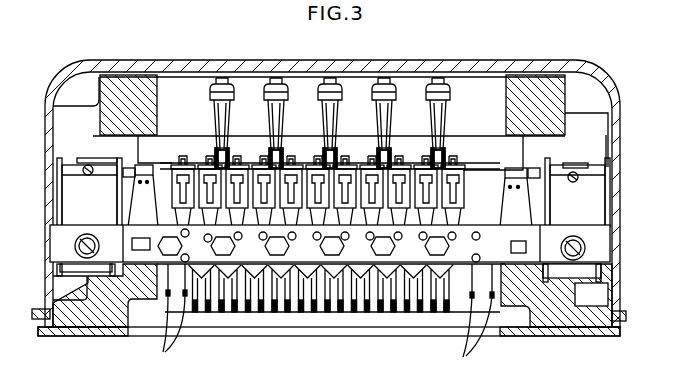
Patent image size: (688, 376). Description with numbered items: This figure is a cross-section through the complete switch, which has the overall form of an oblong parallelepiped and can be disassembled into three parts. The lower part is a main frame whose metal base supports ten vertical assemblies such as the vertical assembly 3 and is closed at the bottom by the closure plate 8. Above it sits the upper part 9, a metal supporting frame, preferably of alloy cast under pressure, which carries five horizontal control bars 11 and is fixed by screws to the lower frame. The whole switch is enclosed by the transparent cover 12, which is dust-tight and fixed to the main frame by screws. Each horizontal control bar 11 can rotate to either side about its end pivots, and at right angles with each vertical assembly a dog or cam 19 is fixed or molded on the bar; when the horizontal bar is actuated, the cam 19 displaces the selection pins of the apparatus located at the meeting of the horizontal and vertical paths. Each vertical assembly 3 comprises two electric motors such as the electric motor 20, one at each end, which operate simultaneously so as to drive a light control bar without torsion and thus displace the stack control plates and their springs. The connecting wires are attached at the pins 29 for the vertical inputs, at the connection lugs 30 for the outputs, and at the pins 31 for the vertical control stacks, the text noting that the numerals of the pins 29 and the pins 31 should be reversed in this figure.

The vertical assembly 3 is at (531, 258).
The closure plate 8 is at (518, 336).
The upper part 9 is at (118, 77).
The horizontal control bar 11 is at (437, 115).
The transparent cover 12 is at (552, 68).
The cam 19 is at (440, 117).
The electric motor 20 is at (80, 189).
The pins 29 is at (165, 318).
The connection lugs 30 is at (353, 316).
The pins 31 is at (472, 320).